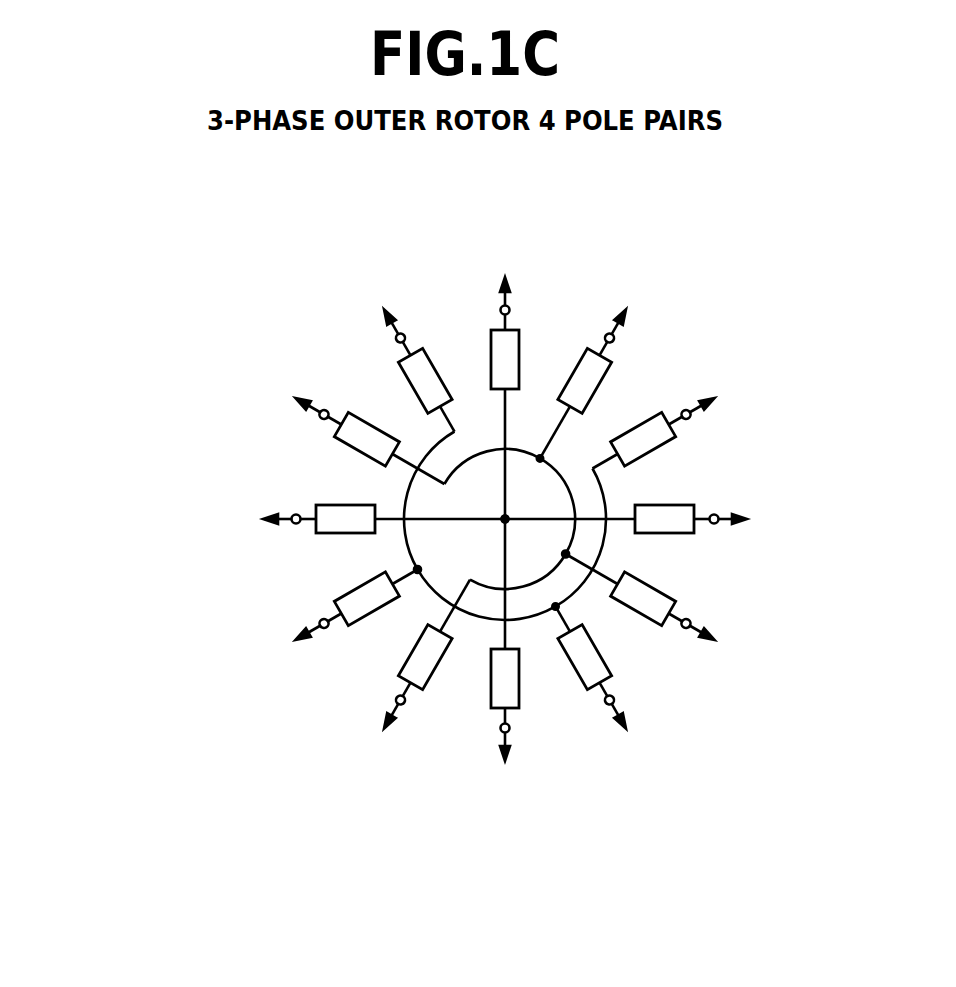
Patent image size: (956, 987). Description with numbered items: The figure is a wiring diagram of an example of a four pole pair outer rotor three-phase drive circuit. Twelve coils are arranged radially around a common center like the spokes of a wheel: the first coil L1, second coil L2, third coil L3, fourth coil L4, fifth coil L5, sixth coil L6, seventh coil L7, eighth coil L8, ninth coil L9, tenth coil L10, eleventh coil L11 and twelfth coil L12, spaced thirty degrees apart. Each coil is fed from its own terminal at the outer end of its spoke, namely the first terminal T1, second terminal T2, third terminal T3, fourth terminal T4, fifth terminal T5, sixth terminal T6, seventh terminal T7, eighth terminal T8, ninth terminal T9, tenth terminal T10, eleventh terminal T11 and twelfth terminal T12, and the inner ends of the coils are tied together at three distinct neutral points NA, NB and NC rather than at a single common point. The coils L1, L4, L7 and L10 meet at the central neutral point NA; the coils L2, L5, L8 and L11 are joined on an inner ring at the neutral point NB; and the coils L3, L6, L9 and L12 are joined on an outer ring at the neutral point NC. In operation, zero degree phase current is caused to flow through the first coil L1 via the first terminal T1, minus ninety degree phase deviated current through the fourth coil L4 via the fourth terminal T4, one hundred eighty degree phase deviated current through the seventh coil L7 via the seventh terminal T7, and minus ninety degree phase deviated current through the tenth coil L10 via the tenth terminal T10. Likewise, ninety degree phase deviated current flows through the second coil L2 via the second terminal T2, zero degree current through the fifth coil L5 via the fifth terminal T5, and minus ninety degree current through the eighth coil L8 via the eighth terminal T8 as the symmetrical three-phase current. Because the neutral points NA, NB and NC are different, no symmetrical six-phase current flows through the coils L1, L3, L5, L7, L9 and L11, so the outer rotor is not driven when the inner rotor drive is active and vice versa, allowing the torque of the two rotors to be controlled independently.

The first coil L1 is at (520, 359).
The second coil L2 is at (581, 406).
The third coil L3 is at (636, 446).
The fourth coil L4 is at (664, 536).
The fifth coil L5 is at (617, 599).
The sixth coil L6 is at (577, 649).
The seventh coil L7 is at (488, 678).
The eighth coil L8 is at (429, 631).
The ninth coil L9 is at (377, 591).
The tenth coil L10 is at (345, 505).
The eleventh coil L11 is at (392, 444).
The twelfth coil L12 is at (432, 388).
The first terminal T1 is at (510, 277).
The second terminal T2 is at (632, 309).
The third terminal T3 is at (726, 402).
The fourth terminal T4 is at (792, 535).
The fifth terminal T5 is at (727, 639).
The sixth terminal T6 is at (637, 734).
The seventh terminal T7 is at (519, 777).
The eighth terminal T8 is at (395, 747).
The ninth terminal T9 is at (281, 661).
The tenth terminal T10 is at (185, 536).
The eleventh terminal T11 is at (277, 382).
The twelfth terminal T12 is at (374, 294).
The neutral point NA is at (505, 519).
The neutral point NB is at (540, 462).
The neutral point NC is at (558, 606).